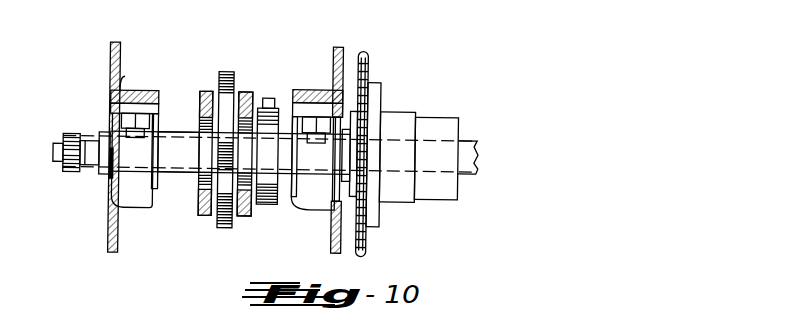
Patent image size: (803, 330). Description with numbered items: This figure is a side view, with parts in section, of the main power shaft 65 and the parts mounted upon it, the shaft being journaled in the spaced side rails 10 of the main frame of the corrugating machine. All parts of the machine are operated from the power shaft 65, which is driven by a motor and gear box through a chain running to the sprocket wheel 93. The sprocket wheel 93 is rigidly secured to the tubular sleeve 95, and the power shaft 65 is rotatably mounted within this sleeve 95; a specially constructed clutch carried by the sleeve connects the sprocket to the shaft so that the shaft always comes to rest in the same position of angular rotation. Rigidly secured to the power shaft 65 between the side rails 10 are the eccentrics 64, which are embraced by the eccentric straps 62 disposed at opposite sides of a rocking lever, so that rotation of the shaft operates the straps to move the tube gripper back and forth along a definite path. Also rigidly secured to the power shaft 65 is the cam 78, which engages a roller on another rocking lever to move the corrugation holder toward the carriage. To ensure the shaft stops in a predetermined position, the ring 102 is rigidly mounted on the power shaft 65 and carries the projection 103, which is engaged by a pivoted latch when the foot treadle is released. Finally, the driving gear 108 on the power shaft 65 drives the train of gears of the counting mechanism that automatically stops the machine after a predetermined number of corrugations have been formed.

The side rail 10 is at (108, 232).
The eccentric strap 62 is at (205, 217).
The eccentric 64 is at (198, 182).
The power shaft 65 is at (178, 142).
The cam 78 is at (233, 70).
The sprocket wheel 93 is at (382, 43).
The tubular sleeve 95 is at (430, 125).
The ring 102 is at (270, 203).
The projection 103 is at (268, 97).
The driving gear 108 is at (70, 174).